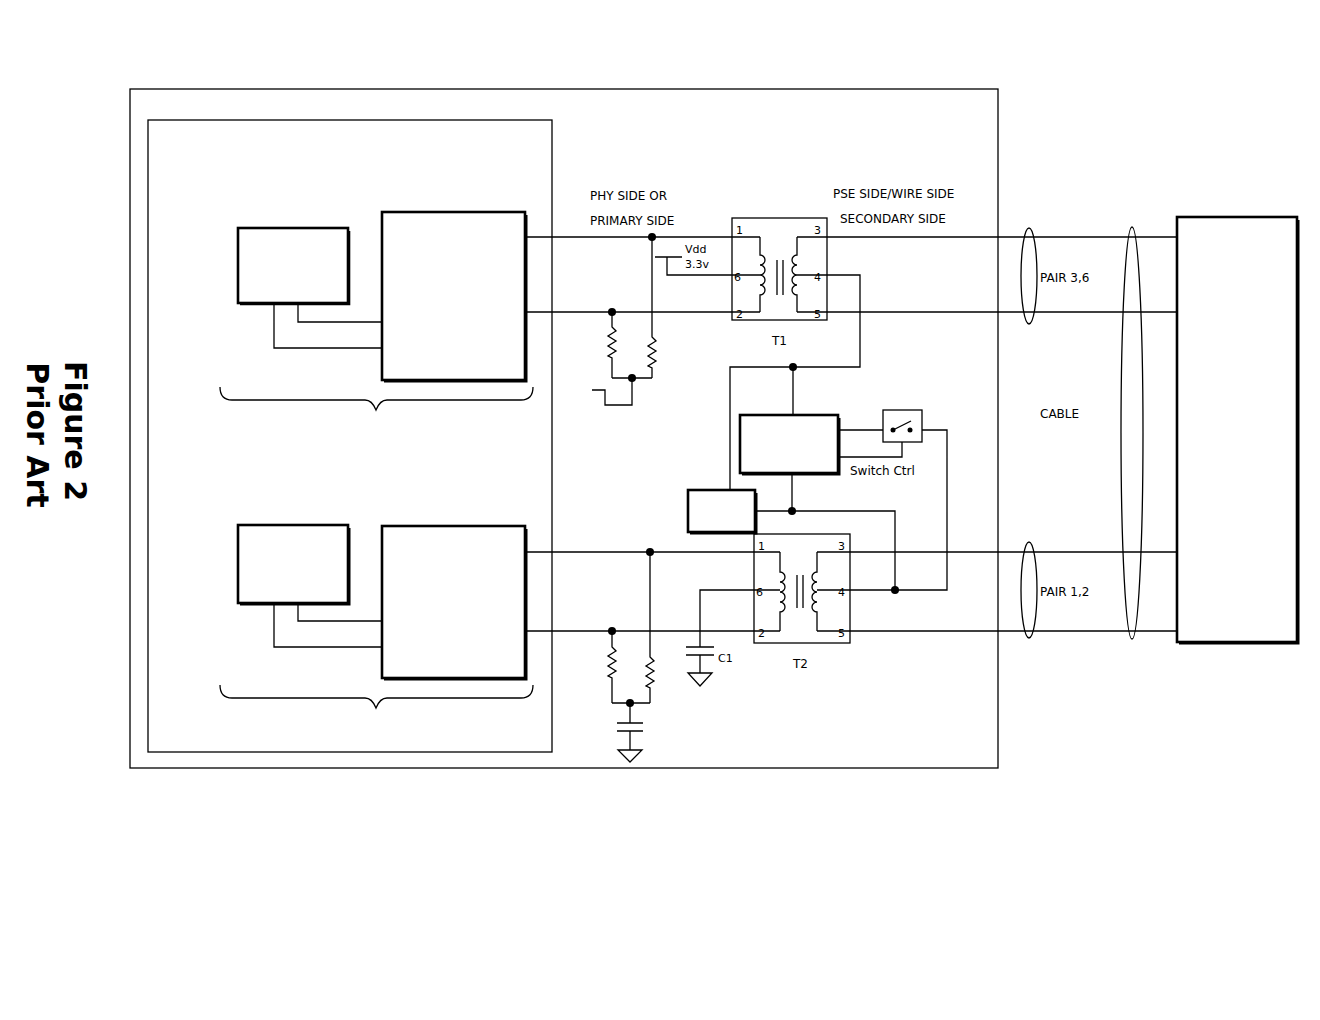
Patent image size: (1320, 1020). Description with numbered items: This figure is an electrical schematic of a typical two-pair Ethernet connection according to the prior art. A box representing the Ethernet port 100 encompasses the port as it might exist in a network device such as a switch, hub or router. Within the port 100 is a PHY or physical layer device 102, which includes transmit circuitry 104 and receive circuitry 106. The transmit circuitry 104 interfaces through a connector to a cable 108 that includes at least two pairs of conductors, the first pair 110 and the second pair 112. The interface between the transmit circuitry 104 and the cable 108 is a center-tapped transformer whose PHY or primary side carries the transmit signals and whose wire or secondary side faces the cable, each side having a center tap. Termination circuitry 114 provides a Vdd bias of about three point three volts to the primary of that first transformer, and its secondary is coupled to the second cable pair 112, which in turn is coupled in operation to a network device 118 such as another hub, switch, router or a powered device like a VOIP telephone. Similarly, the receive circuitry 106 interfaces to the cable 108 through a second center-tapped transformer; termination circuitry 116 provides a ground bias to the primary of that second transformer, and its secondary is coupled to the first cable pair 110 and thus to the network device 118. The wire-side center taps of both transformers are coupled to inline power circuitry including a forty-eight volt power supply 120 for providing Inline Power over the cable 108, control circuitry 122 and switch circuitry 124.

The Ethernet port 100 is at (362, 89).
The PHY or physical layer device 102 is at (447, 120).
The transmit circuitry 104 is at (344, 322).
The receive circuitry 106 is at (376, 626).
The cable 108 is at (1132, 227).
The Pair 1-2 110 is at (1029, 542).
The Pair 3-6 112 is at (1029, 228).
The termination circuitry 114 is at (648, 385).
The termination circuitry 116 is at (669, 707).
The network device 118 is at (1258, 447).
The 48 VDC power supply 120 is at (688, 503).
The control circuitry 122 is at (808, 415).
The switch circuitry 124 is at (906, 410).